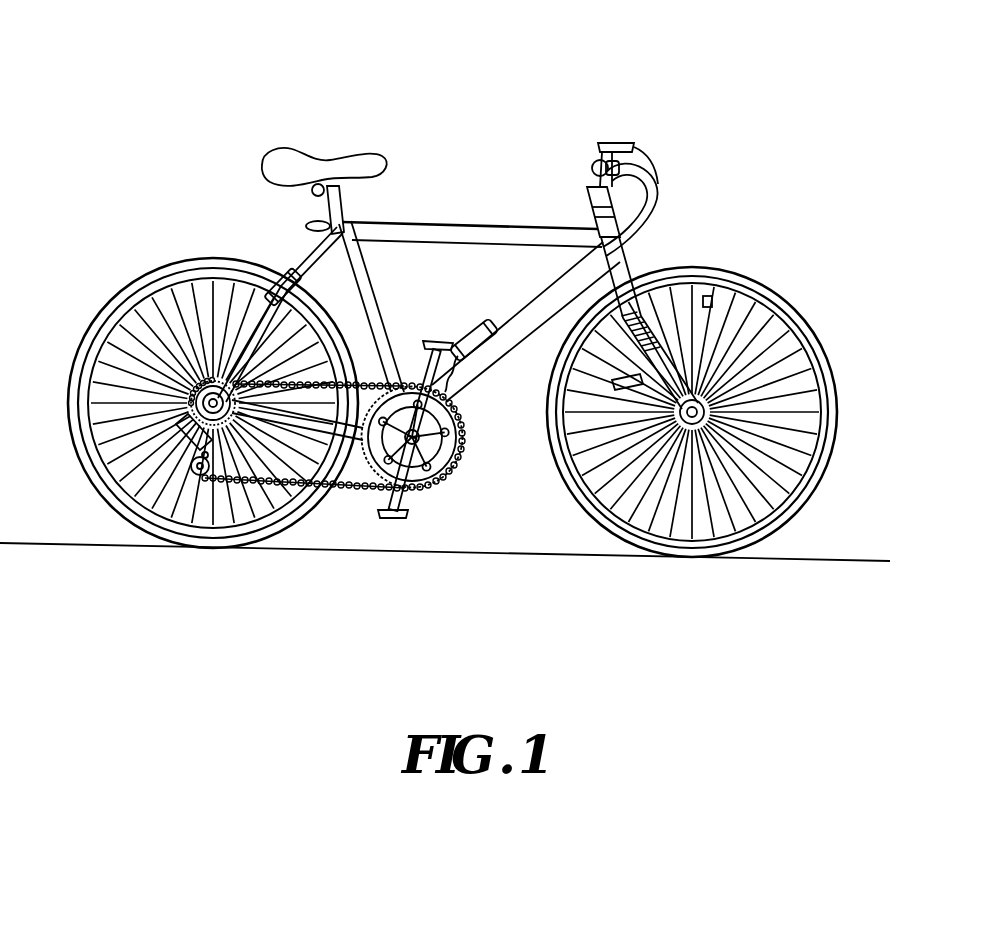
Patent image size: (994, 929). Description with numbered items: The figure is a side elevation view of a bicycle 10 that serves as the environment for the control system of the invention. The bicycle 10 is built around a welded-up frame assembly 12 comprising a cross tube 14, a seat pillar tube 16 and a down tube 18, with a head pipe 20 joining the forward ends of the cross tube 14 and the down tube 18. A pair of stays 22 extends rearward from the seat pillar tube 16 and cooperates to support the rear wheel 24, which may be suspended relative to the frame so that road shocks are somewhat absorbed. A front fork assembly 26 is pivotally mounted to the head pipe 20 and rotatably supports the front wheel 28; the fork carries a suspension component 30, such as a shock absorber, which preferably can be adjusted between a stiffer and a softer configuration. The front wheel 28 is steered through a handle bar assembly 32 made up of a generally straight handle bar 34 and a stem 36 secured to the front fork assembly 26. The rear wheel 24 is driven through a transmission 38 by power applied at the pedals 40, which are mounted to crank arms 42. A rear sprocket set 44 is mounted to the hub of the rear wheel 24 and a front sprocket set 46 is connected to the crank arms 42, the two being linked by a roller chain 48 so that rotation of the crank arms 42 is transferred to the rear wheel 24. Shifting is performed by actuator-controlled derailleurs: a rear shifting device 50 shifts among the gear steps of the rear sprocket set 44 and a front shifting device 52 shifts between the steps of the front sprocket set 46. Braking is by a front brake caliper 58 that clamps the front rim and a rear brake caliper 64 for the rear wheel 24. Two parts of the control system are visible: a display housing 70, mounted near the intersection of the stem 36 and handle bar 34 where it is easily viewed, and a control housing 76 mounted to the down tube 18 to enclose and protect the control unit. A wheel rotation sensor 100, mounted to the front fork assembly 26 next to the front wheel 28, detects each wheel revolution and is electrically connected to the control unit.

The bicycle 10 is at (490, 145).
The frame assembly 12 is at (440, 200).
The cross tube 14 is at (515, 238).
The seat pillar tube 16 is at (362, 292).
The down tube 18 is at (470, 405).
The head pipe 20 is at (630, 255).
The stays 22 is at (264, 292).
The rear wheel 24 is at (118, 298).
The front fork assembly 26 is at (658, 325).
The front wheel 28 is at (812, 482).
The suspension component 30 is at (548, 399).
The handle bar assembly 32 is at (578, 172).
The handle bar 34 is at (590, 150).
The stem 36 is at (588, 192).
The transmission 38 is at (320, 510).
The pedals 40 is at (438, 328).
The crank arms 42 is at (416, 487).
The rear sprocket set 44 is at (163, 426).
The front sprocket set 46 is at (455, 470).
The roller chain 48 is at (346, 492).
The rear shifting device 50 is at (190, 490).
The front shifting device 52 is at (362, 362).
The front brake caliper 58 is at (645, 302).
The rear brake caliper 64 is at (288, 275).
The display housing 70 is at (625, 132).
The control housing 76 is at (473, 322).
The wheel rotation sensor 100 is at (700, 352).